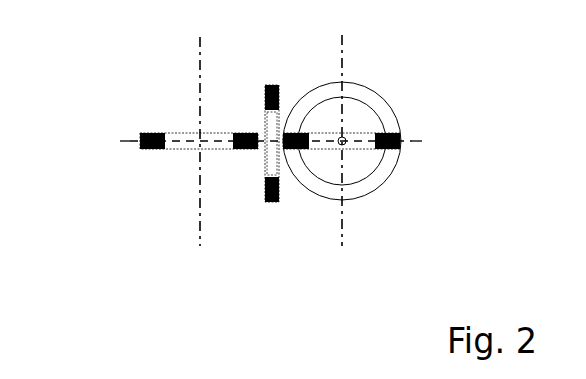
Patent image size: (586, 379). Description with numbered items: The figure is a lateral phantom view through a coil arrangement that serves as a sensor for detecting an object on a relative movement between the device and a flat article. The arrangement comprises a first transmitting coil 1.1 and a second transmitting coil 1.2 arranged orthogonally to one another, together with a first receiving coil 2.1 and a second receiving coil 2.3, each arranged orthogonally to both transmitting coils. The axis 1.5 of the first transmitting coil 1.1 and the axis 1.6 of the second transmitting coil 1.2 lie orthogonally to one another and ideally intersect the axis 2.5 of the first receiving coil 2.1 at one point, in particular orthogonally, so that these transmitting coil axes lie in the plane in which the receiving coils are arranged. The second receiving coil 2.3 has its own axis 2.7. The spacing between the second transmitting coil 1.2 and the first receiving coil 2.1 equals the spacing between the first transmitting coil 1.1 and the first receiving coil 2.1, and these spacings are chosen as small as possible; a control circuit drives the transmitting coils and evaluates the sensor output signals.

The first transmitting coil 1.1 is at (265, 107).
The second transmitting coil 1.2 is at (376, 174).
The axis of the first transmitting coil 1.5 is at (127, 135).
The axis of the second transmitting coil 1.6 is at (339, 138).
The first receiving coil 2.1 is at (402, 147).
The second receiving coil 2.3 is at (138, 149).
The axis of the first receiving coil 2.5 is at (347, 73).
The axis of the second receiving coil 2.7 is at (196, 197).